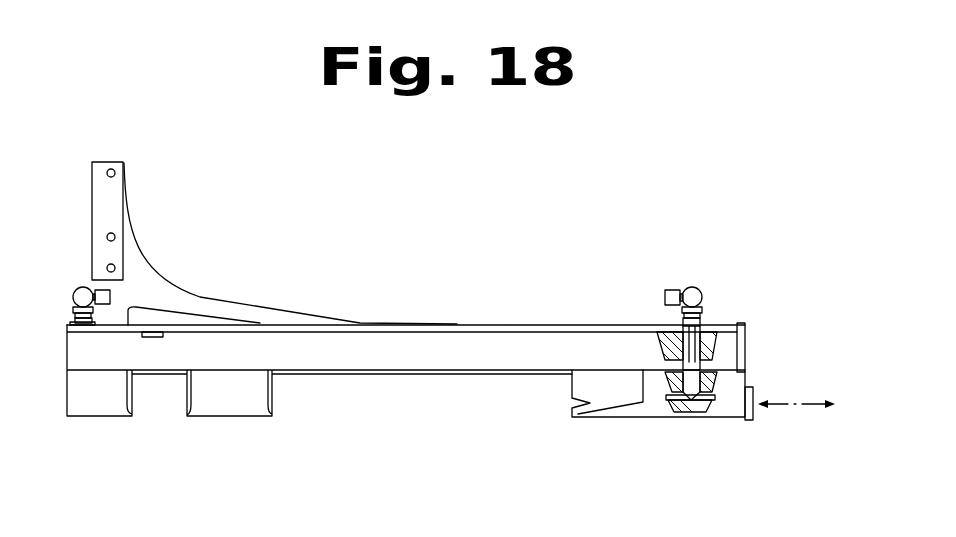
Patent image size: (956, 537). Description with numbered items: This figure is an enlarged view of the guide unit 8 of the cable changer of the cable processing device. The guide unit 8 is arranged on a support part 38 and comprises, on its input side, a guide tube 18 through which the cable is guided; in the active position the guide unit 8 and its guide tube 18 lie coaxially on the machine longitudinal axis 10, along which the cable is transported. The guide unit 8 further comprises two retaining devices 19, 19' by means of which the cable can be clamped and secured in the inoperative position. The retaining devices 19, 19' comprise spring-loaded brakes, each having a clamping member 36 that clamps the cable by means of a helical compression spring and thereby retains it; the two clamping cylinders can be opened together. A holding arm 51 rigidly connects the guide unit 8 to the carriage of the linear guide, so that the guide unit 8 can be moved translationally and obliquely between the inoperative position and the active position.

The guide unit 8 is at (509, 308).
The machine longitudinal axis 10 is at (817, 405).
The guide tube 18 is at (730, 408).
The retaining device 19 is at (673, 312).
The retaining device 19' is at (76, 255).
The clamping member 36 is at (693, 383).
The support part 38 is at (364, 352).
The holding arm 51 is at (195, 302).